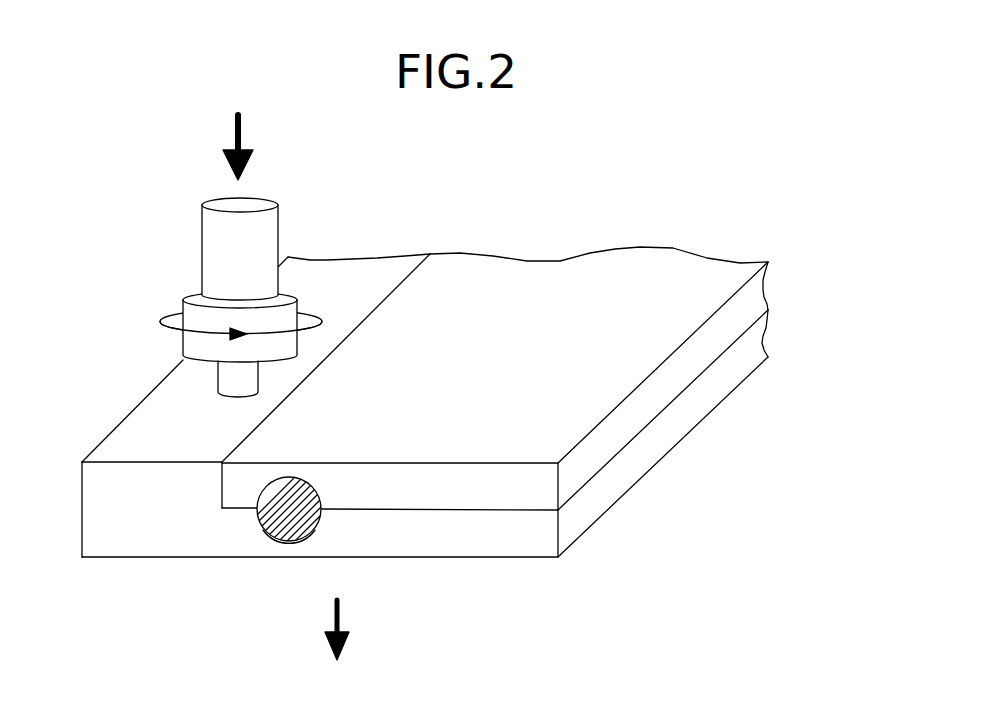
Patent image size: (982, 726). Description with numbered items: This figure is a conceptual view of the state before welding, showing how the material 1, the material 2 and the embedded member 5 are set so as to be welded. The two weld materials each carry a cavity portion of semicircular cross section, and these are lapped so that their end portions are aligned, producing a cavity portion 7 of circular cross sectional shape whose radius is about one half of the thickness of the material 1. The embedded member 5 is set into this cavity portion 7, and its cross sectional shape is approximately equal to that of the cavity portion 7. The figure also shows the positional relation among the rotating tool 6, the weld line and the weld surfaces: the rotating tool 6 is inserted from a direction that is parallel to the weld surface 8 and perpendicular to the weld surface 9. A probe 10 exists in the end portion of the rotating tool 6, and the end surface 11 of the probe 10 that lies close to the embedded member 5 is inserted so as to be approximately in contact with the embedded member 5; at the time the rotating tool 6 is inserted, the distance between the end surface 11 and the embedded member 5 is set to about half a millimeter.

The material 1 is at (752, 293).
The material 2 is at (678, 421).
The embedded member 5 is at (305, 522).
The rotating tool 6 is at (279, 226).
The cavity portion 7 is at (263, 537).
The weld surface 8 is at (222, 488).
The weld surface 9 is at (242, 510).
The probe 10 is at (218, 378).
The end surface 11 is at (267, 377).